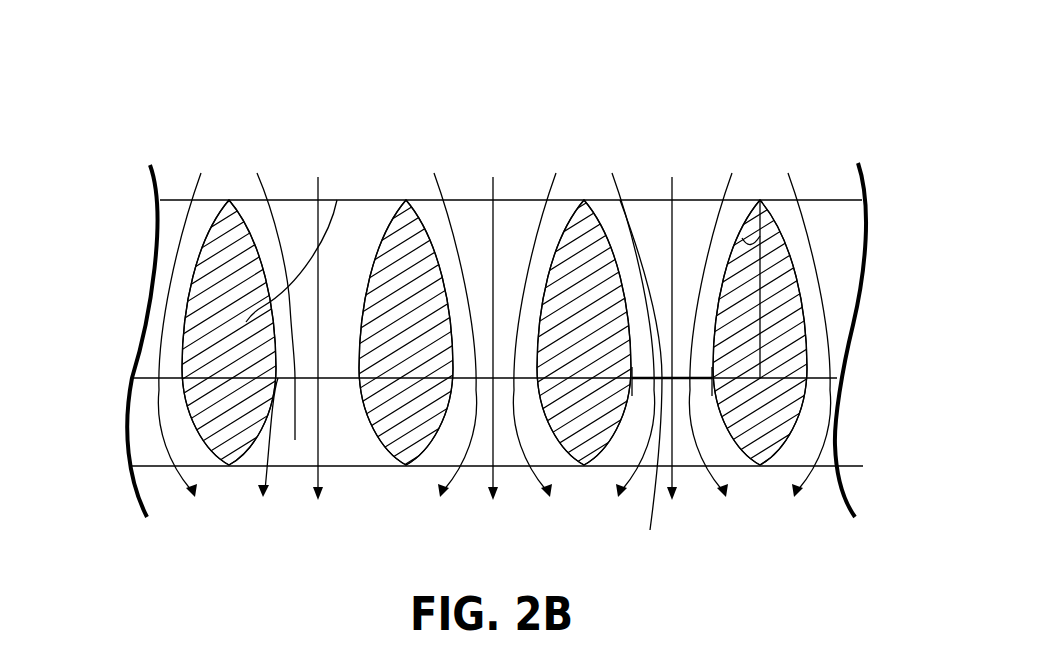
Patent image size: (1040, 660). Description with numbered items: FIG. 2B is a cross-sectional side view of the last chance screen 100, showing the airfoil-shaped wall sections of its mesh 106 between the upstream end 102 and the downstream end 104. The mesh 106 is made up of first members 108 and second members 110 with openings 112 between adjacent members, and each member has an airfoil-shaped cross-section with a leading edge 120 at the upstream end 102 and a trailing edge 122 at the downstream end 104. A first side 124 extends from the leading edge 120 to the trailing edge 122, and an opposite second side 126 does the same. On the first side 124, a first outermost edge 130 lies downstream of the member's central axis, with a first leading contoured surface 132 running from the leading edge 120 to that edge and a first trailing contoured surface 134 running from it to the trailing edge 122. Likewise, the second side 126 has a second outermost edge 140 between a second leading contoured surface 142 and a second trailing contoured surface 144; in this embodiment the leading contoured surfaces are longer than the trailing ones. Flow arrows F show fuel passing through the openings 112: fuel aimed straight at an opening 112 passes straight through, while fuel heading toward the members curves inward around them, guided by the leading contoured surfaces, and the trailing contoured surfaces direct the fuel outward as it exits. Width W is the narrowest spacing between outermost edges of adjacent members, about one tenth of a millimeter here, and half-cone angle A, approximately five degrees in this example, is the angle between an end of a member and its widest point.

The last chance screen 100 is at (238, 96).
The upstream end 102 is at (809, 190).
The downstream end 104 is at (828, 506).
The mesh 106 is at (830, 290).
The first members 108 is at (178, 455).
The second members 110 is at (857, 237).
The openings 112 is at (167, 398).
The leading edge 120 is at (228, 200).
The trailing edge 122 is at (228, 466).
The first side 124 is at (182, 338).
The second side 126 is at (366, 490).
The first outermost edge 130 is at (184, 378).
The first leading contoured surface 132 is at (200, 265).
The first trailing contoured surface 134 is at (207, 420).
The second outermost edge 140 is at (278, 378).
The second leading contoured surface 142 is at (243, 227).
The second trailing contoured surface 144 is at (263, 466).
The flow arrows F is at (670, 187).
The half-cone angle A is at (747, 242).
The width W is at (641, 375).